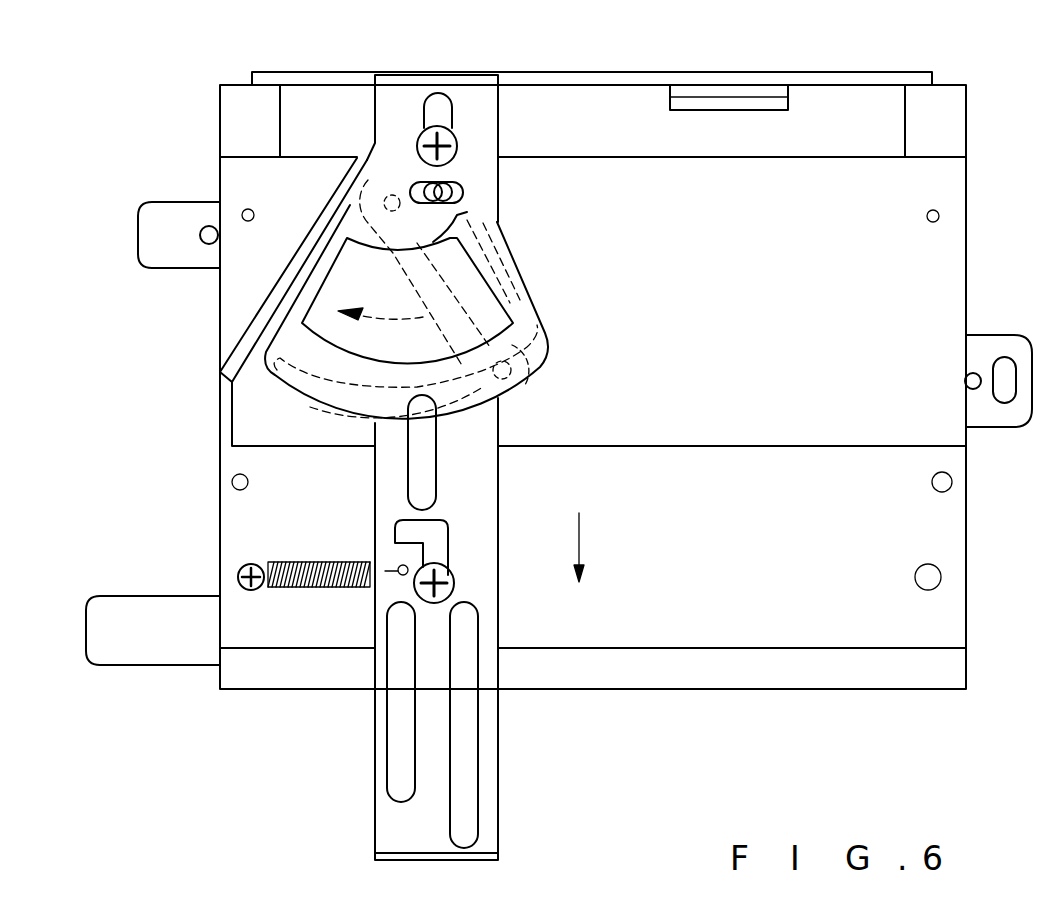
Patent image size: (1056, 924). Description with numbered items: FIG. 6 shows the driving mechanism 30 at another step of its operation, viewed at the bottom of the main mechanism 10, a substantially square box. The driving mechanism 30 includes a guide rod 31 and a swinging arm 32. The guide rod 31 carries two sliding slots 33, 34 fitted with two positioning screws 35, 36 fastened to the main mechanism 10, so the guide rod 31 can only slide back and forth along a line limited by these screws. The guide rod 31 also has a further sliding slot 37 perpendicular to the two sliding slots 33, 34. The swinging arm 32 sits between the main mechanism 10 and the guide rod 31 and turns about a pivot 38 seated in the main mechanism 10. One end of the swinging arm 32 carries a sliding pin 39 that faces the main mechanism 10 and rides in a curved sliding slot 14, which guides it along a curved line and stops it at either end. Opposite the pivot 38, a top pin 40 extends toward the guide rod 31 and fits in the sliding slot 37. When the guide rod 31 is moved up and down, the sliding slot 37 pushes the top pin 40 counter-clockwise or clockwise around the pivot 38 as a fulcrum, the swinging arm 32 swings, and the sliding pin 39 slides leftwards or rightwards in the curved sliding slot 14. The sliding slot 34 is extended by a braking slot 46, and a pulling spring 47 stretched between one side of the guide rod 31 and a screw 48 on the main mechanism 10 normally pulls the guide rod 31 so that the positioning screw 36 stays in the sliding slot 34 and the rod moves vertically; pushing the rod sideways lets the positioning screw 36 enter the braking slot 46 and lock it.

The main mechanism 10 is at (613, 90).
The curved sliding slot 14 is at (232, 385).
The driving mechanism 30 is at (572, 245).
The guide rod 31 is at (483, 767).
The swinging arm 32 is at (503, 283).
The sliding slot 33 is at (436, 97).
The sliding slot 34 is at (438, 552).
The positioning screw 35 is at (423, 138).
The positioning screw 36 is at (452, 588).
The sliding slot 37 is at (463, 192).
The pivot 38 is at (385, 197).
The sliding pin 39 is at (520, 378).
The top pin 40 is at (450, 180).
The braking slot 46 is at (395, 528).
The pulling spring 47 is at (308, 587).
The screw 48 is at (238, 575).